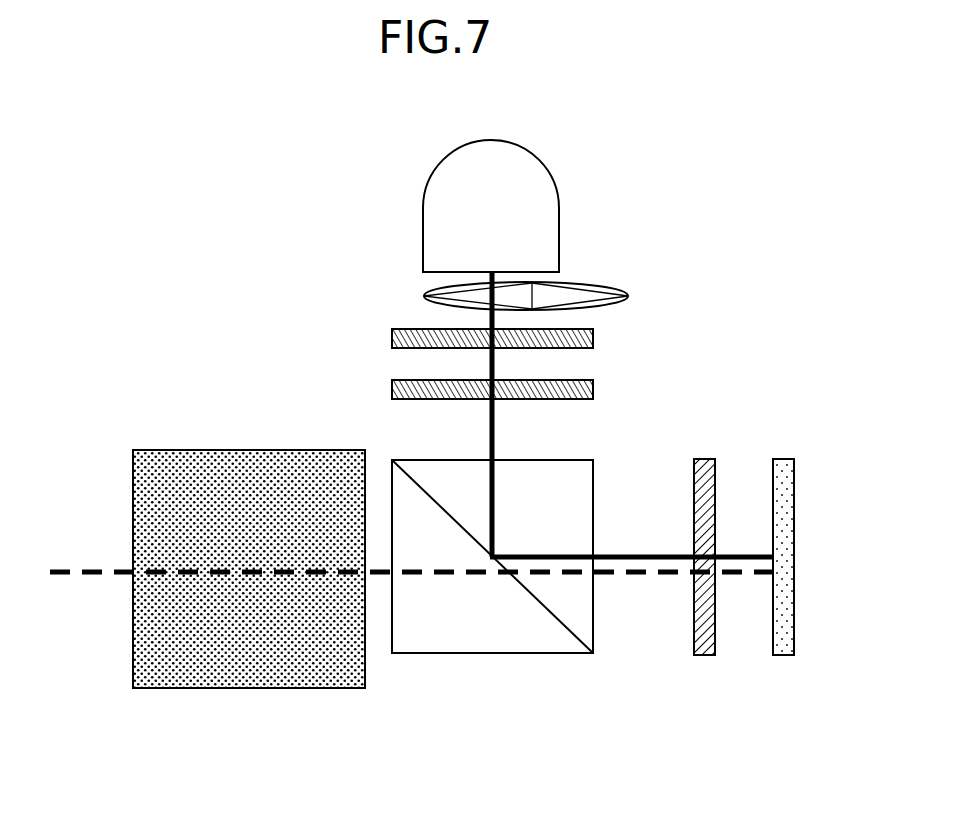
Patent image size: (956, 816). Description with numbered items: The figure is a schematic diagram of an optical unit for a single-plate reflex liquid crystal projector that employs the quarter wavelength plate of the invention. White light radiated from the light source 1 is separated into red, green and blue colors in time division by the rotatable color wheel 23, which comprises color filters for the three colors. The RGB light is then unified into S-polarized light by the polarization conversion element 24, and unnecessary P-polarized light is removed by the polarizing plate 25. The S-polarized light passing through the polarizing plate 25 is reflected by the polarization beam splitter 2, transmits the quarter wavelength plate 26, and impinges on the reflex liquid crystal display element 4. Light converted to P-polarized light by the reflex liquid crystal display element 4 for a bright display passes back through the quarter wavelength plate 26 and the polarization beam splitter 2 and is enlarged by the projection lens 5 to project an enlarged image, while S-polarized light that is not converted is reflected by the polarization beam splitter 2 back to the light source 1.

The light source 1 is at (547, 229).
The rotatable color wheel 23 is at (618, 289).
The polarization conversion element 24 is at (398, 330).
The polarizing plate 25 is at (398, 381).
The polarization beam splitter 2 is at (577, 498).
The projection lens 5 is at (248, 458).
The quarter wavelength plate 26 is at (705, 458).
The reflex liquid crystal display element 4 is at (783, 458).